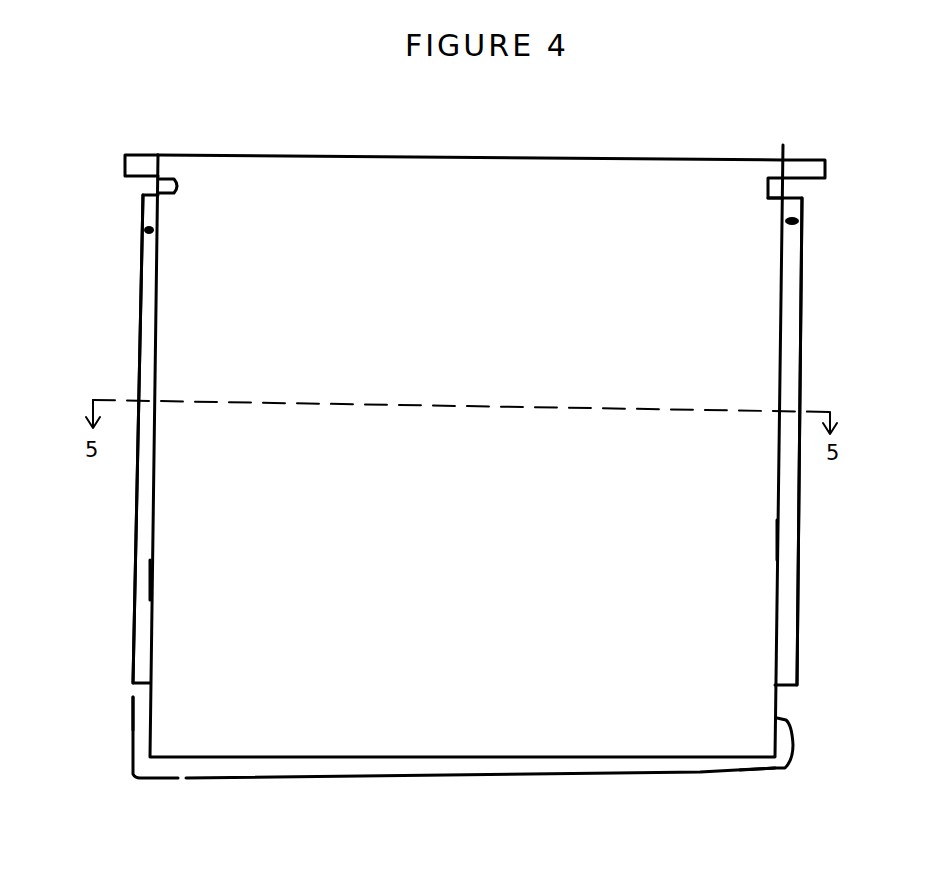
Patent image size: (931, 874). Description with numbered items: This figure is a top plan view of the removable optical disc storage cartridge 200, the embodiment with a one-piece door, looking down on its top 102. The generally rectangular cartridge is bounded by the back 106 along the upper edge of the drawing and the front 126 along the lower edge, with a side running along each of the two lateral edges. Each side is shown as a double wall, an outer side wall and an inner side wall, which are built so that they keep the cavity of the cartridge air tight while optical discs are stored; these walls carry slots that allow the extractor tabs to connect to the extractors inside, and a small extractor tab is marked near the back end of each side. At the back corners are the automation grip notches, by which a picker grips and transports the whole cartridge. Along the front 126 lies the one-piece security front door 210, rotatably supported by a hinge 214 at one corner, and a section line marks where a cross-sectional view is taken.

The removable optical disc storage cartridge 200 is at (676, 100).
The top 102 is at (486, 607).
The back 106 is at (270, 156).
The front 126 is at (530, 803).
The one-piece security front door 210 is at (733, 770).
The hinge 214 is at (137, 695).